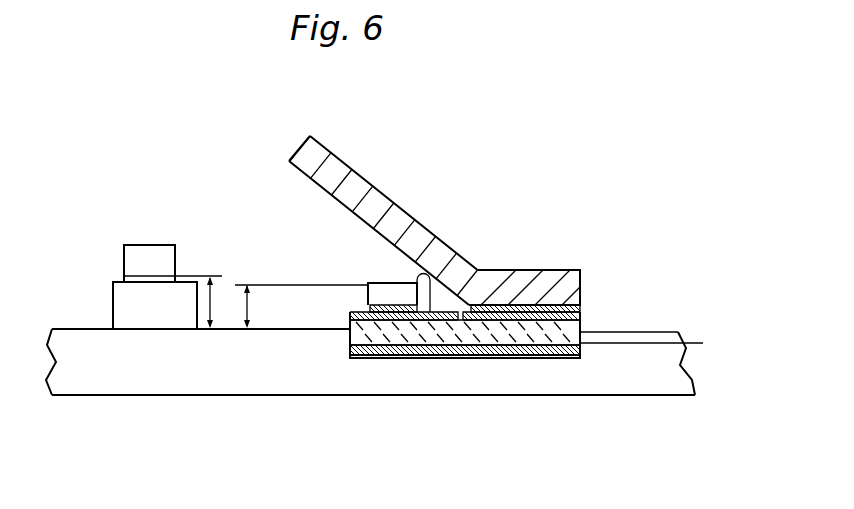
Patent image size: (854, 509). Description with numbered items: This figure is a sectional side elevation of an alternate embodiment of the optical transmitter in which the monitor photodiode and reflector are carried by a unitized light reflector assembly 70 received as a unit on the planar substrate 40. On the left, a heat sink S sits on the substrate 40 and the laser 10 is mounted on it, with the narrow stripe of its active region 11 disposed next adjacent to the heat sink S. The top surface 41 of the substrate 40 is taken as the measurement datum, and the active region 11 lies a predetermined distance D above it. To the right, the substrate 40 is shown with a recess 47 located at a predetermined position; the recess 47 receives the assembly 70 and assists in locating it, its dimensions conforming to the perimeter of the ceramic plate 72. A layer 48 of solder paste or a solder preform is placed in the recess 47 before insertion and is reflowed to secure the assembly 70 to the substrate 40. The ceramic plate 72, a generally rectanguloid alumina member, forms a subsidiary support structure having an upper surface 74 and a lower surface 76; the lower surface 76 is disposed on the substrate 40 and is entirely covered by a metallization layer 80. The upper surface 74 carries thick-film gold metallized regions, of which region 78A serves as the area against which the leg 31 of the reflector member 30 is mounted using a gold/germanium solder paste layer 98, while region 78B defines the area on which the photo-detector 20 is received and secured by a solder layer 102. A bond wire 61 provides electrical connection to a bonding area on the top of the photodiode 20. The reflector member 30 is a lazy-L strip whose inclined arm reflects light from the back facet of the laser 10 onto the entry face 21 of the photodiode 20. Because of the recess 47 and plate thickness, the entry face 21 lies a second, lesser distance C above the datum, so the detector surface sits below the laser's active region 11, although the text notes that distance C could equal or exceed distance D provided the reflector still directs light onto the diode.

The laser 10 is at (162, 236).
The active region 11 is at (140, 272).
The heat sink S is at (138, 305).
The predetermined distance D is at (212, 303).
The second distance C is at (257, 305).
The photo-detector 20 is at (357, 279).
The entry face 21 is at (372, 282).
The solder layer 102 is at (392, 307).
The bond wire 61 is at (422, 275).
The reflector member 30 is at (480, 258).
The leg 31 is at (528, 280).
The solder paste layer 98 is at (546, 307).
The metallized region 78A is at (583, 316).
The metallized region 78B is at (362, 318).
The ceramic plate 72 is at (352, 350).
The upper surface 74 is at (352, 324).
The lower surface 76 is at (402, 358).
The metallization layer 80 is at (468, 358).
The solder layer 48 is at (545, 358).
The unitized light reflector assembly 70 is at (376, 370).
The substrate 40 is at (674, 380).
The top surface 41 is at (236, 324).
The recess 47 is at (655, 343).